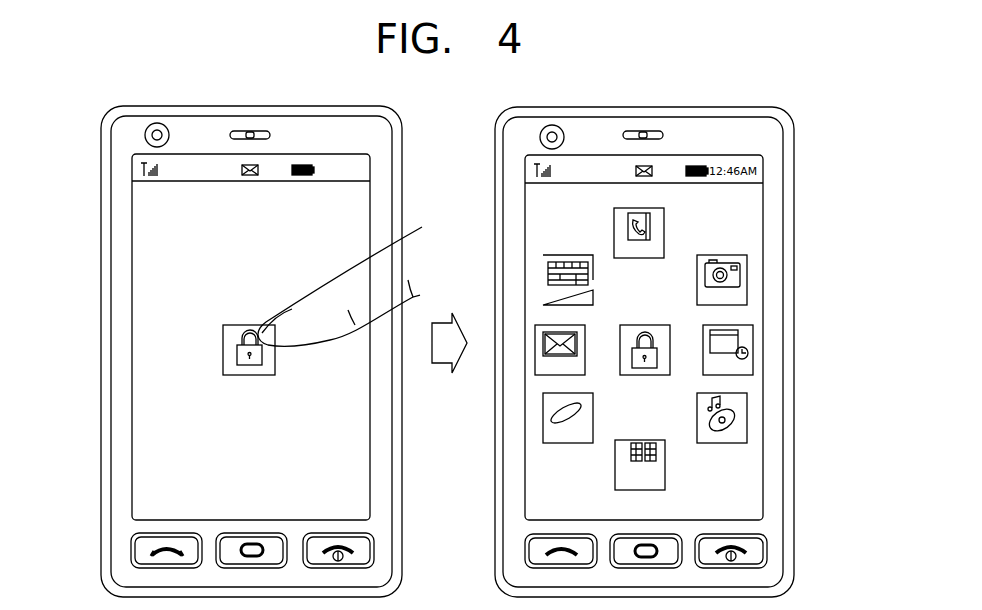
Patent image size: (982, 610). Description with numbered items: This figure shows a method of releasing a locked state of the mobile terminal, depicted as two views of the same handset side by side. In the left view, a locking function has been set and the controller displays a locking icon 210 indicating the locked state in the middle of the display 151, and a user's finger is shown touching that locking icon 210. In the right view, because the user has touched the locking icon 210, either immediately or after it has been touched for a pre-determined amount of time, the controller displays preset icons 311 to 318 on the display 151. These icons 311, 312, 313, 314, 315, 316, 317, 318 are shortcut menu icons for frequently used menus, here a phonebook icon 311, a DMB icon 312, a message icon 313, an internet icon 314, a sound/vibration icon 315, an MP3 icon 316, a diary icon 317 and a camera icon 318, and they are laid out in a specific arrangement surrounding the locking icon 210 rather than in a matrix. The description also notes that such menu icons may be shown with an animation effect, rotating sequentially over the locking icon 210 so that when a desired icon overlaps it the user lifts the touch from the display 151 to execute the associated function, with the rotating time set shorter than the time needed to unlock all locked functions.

The display 151 is at (143, 283).
The locking icon 210 is at (223, 350).
The icon 311 is at (664, 230).
The icon 312 is at (543, 282).
The icon 313 is at (535, 348).
The icon 314 is at (543, 419).
The icon 315 is at (665, 462).
The icon 316 is at (747, 418).
The icon 317 is at (757, 352).
The icon 318 is at (747, 281).